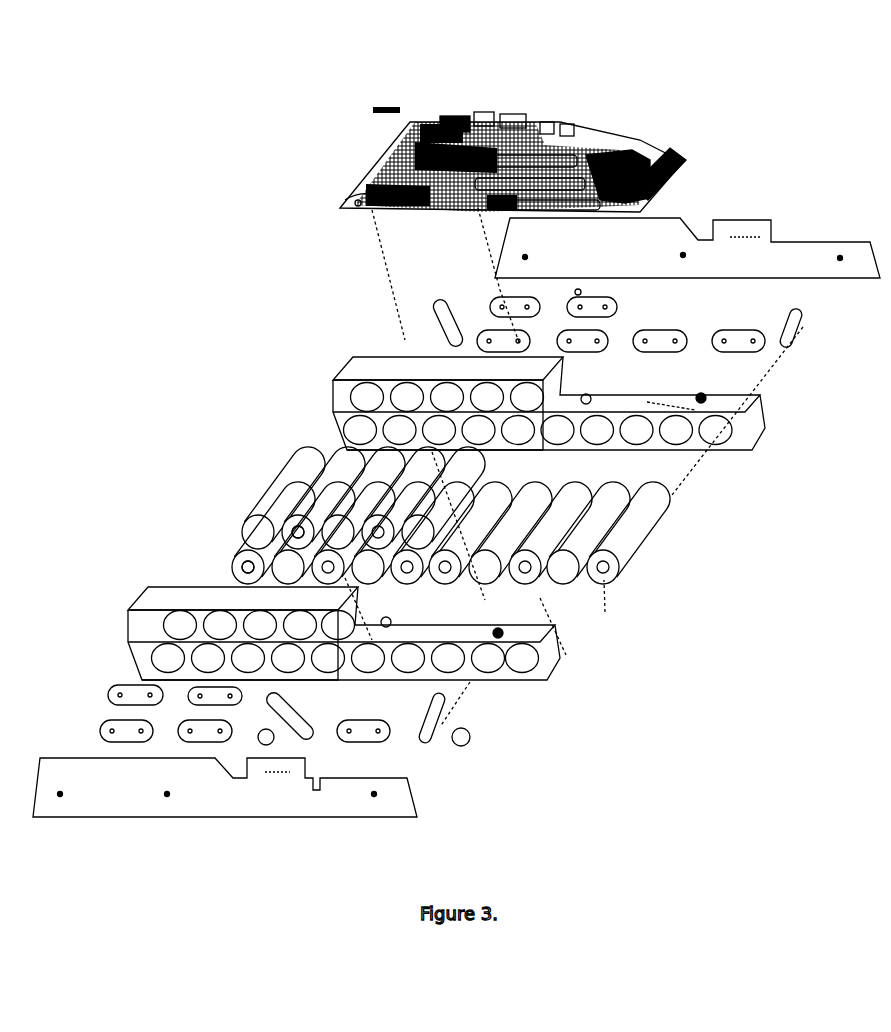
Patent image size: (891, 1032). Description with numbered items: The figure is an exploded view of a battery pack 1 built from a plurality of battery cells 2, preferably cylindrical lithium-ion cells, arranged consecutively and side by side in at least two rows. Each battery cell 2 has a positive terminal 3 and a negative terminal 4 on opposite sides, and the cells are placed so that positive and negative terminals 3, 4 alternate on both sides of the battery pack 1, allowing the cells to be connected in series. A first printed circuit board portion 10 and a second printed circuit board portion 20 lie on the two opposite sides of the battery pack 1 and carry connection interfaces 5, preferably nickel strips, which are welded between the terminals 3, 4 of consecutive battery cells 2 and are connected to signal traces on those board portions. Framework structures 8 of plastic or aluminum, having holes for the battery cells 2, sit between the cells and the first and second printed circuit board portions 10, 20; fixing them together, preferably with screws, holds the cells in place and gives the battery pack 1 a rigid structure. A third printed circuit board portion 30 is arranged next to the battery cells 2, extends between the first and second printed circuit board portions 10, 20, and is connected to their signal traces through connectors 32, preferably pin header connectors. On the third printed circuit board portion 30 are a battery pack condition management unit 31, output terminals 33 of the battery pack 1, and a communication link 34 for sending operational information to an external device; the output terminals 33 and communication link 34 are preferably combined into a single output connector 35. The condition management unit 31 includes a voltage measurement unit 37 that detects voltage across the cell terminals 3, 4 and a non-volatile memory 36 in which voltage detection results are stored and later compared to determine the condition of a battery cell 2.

The battery pack 1 is at (452, 451).
The battery cells 2 is at (408, 528).
The positive terminal 3 is at (562, 593).
The negative terminal 4 is at (257, 547).
The connection interfaces 5 is at (787, 338).
The framework structures 8 is at (760, 427).
The first printed circuit board portion 10 is at (780, 257).
The second printed circuit board portion 20 is at (200, 795).
The third printed circuit board portion 30 is at (515, 164).
The battery pack condition management unit 31 is at (462, 118).
The connectors 32 is at (373, 110).
The output terminals 33 is at (660, 150).
The communication link 34 is at (646, 150).
The output connector 35 is at (668, 147).
The non-volatile memory 36 is at (482, 112).
The voltage measurement unit 37 is at (512, 115).